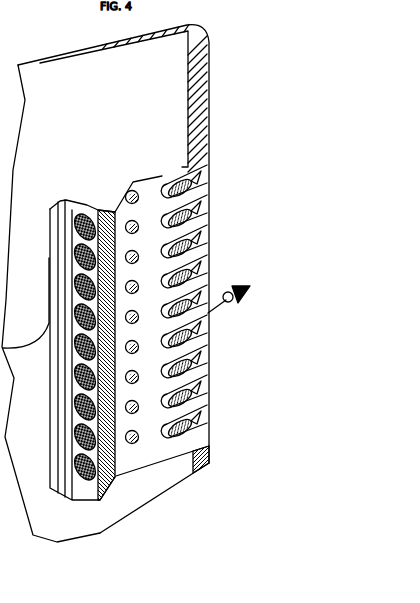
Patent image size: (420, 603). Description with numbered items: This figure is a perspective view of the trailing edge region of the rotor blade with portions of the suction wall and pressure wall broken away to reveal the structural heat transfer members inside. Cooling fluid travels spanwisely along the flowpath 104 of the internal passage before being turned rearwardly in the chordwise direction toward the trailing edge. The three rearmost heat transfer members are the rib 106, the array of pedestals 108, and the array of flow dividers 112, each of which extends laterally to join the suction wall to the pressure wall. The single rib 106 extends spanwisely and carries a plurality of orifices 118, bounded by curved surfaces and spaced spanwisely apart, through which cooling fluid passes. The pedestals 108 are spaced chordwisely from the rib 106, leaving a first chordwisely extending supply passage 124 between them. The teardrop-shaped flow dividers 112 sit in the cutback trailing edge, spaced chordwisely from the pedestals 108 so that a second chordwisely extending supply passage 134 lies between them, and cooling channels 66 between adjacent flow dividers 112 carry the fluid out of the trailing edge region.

The cooling channels 66 is at (200, 248).
The flowpath 104 is at (218, 304).
The rib 106 is at (72, 238).
The array of pedestals 108 is at (137, 223).
The array of flow dividers 112 is at (200, 410).
The orifices 118 is at (193, 177).
The first chordwisely extending supply passage 124 is at (128, 461).
The second chordwisely extending supply passage 134 is at (155, 435).